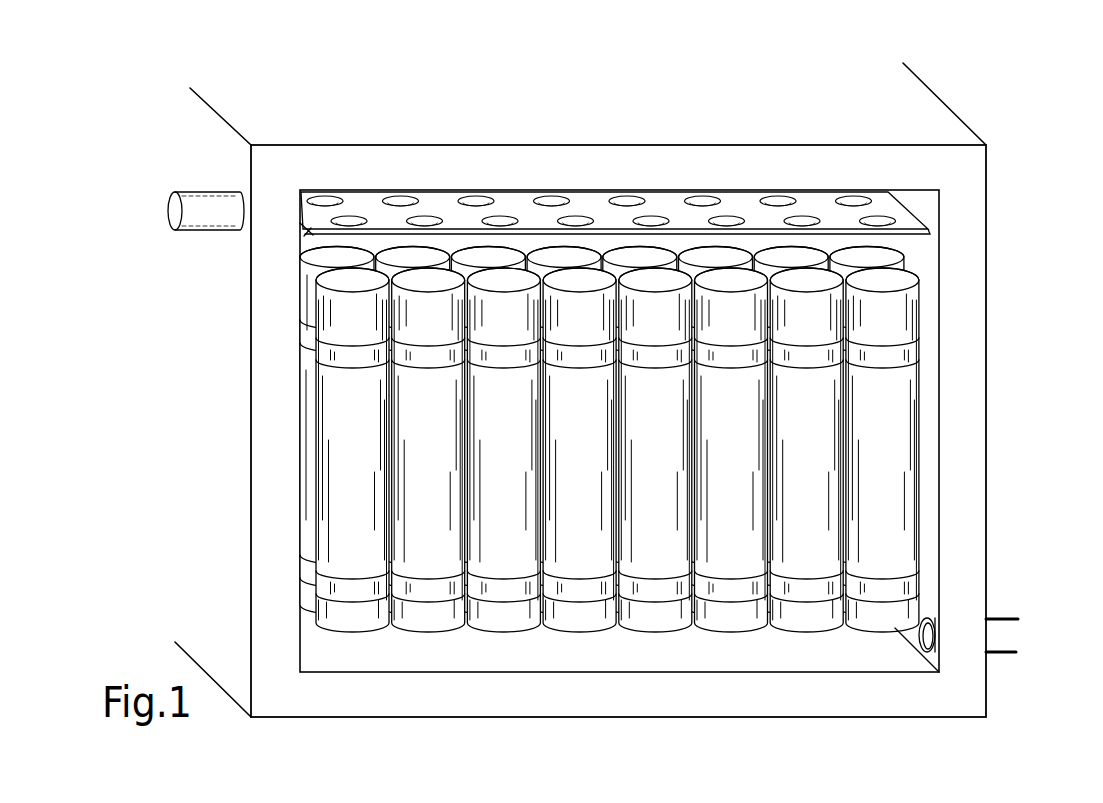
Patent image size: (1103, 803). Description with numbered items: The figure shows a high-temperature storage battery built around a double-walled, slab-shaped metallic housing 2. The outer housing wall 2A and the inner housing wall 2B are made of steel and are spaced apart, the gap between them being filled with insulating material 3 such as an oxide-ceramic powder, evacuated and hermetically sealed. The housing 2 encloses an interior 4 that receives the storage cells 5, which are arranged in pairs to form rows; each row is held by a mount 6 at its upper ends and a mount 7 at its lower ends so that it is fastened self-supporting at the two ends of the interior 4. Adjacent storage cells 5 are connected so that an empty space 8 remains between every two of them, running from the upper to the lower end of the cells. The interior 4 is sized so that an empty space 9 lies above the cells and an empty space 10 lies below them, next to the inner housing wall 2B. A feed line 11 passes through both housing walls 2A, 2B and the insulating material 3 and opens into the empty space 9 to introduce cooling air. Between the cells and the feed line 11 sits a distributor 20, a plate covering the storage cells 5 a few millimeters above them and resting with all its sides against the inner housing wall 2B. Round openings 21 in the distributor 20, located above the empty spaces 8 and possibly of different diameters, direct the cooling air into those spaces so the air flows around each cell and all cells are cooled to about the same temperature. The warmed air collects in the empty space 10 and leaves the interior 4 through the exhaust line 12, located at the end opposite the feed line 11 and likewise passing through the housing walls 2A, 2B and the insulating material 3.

The housing 2 is at (547, 80).
The outer housing wall 2A is at (946, 95).
The inner housing wall 2B is at (912, 190).
The insulating material 3 is at (606, 176).
The interior 4 is at (933, 360).
The storage cells 5 is at (285, 450).
The mount 6 is at (332, 347).
The mount 7 is at (213, 595).
The empty space 8 is at (538, 630).
The empty space 9 is at (313, 235).
The empty space 10 is at (928, 658).
The feed line 11 is at (198, 218).
The exhaust line 12 is at (920, 650).
The distributor 20 is at (615, 156).
The openings 21 is at (393, 188).